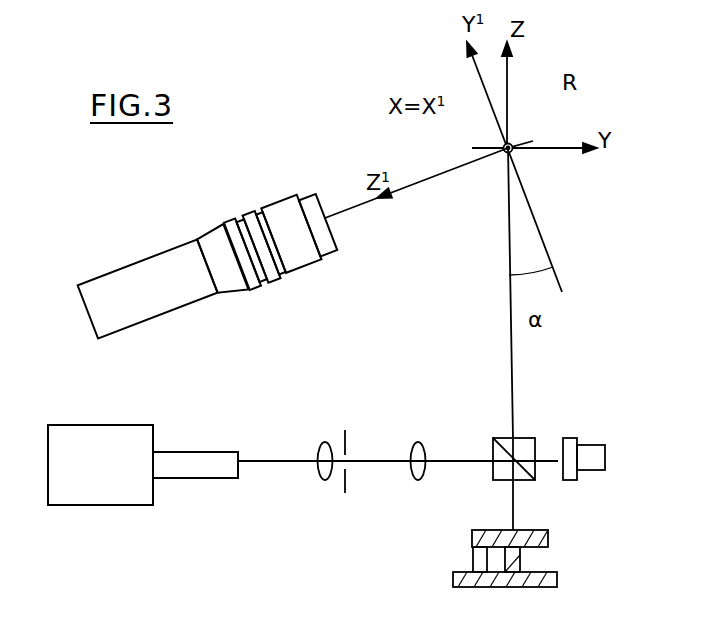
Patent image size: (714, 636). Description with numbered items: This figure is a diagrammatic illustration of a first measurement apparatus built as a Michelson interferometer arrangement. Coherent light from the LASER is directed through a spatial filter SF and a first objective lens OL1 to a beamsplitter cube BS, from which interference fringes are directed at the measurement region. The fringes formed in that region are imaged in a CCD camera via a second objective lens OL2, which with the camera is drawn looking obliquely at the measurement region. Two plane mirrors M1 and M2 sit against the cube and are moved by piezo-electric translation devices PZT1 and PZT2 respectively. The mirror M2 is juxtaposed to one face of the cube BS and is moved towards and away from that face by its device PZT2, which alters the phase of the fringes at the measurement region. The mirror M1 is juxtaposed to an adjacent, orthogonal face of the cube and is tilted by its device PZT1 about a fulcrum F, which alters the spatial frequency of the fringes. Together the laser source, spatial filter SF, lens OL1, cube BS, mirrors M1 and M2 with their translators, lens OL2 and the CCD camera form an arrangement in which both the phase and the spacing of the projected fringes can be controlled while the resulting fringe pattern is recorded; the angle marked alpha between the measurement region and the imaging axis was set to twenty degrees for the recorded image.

The laser LASER is at (143, 465).
The spatial filter SF is at (332, 449).
The objective lens OL1 is at (421, 442).
The beamsplitter cube BS is at (502, 442).
The plane mirror M1 is at (498, 524).
The plane mirror M2 is at (574, 441).
The piezo-electric translation device PZT1 is at (460, 555).
The piezo-electric translation device PZT2 is at (608, 477).
The fulcrum F is at (512, 565).
The objective lens OL2 is at (274, 219).
The CCD camera CCD is at (162, 285).